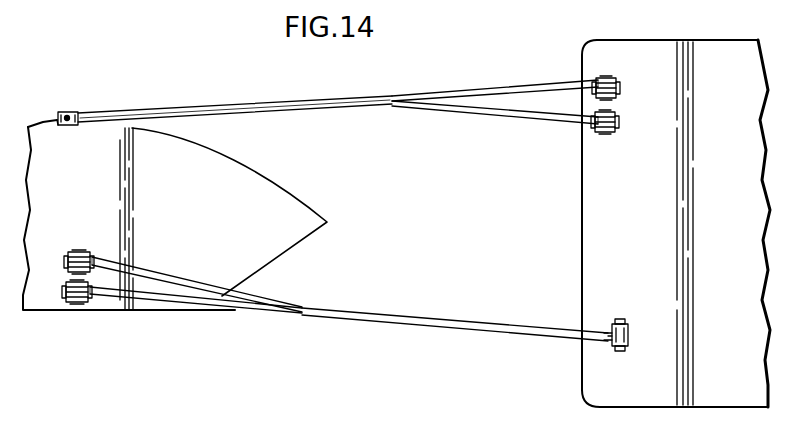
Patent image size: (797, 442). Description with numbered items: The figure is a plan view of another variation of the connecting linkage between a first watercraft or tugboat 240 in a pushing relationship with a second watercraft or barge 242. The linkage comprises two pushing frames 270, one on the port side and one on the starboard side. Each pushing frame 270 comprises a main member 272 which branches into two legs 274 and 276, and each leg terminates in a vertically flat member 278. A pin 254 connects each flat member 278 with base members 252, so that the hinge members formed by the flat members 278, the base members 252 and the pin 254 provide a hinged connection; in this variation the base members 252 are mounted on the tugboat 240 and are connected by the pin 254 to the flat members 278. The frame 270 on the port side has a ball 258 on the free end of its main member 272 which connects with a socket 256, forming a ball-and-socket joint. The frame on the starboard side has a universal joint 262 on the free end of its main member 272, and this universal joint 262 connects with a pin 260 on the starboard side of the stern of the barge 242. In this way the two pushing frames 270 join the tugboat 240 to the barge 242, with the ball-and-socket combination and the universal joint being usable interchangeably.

The tugboat 240 is at (289, 192).
The barge 242 is at (602, 240).
The base members 252 is at (620, 84).
The pin 254 is at (613, 66).
The socket 256 is at (64, 126).
The ball 258 is at (67, 112).
The pin 260 is at (630, 338).
The universal joint 262 is at (613, 343).
The pushing frames 270 is at (313, 98).
The main member 272 is at (240, 108).
The leg 274 is at (430, 93).
The leg 276 is at (446, 110).
The vertically flat member 278 is at (594, 83).